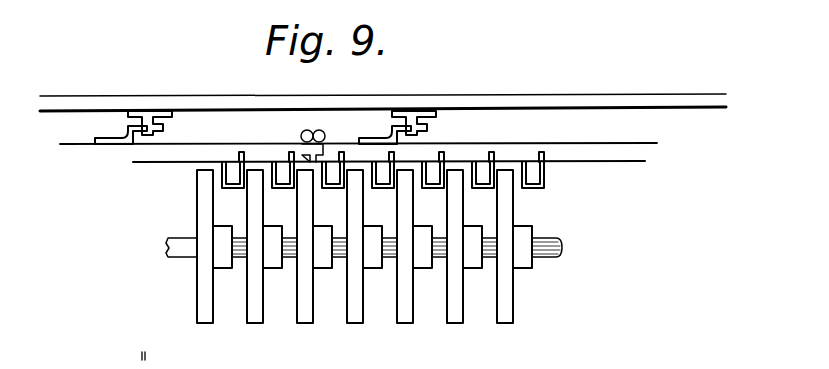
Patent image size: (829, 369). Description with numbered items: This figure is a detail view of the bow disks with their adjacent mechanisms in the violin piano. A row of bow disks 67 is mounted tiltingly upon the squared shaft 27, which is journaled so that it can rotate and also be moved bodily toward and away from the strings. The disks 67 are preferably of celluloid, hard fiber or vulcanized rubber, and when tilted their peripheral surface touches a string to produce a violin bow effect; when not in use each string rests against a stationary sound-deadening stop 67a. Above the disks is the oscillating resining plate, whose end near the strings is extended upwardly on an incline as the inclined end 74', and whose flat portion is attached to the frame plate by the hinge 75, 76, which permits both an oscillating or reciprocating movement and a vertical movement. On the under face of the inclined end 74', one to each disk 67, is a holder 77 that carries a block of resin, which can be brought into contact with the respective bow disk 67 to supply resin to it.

The shaft 27 is at (551, 240).
The bow disk 67 is at (205, 211).
The sound-deadening stop 67a is at (220, 268).
The inclined end of plate 74' is at (389, 176).
The hinge 75 is at (129, 126).
The hinge 76 is at (171, 118).
The holder 77 is at (238, 165).